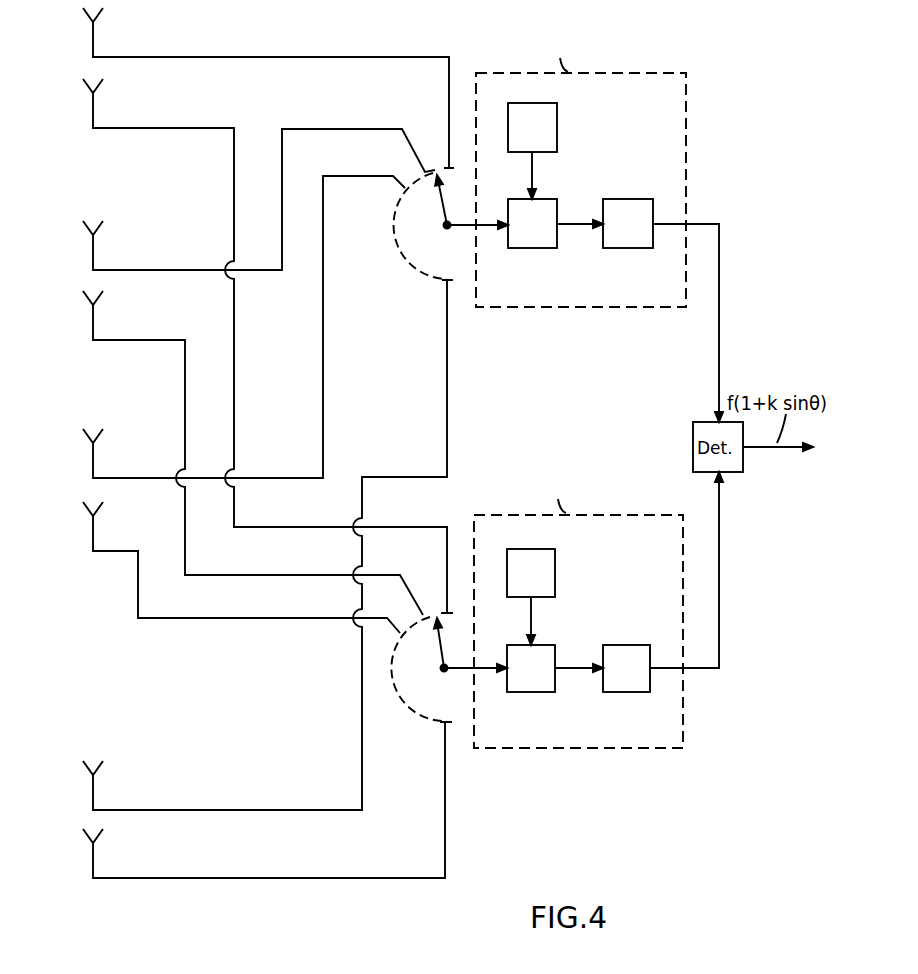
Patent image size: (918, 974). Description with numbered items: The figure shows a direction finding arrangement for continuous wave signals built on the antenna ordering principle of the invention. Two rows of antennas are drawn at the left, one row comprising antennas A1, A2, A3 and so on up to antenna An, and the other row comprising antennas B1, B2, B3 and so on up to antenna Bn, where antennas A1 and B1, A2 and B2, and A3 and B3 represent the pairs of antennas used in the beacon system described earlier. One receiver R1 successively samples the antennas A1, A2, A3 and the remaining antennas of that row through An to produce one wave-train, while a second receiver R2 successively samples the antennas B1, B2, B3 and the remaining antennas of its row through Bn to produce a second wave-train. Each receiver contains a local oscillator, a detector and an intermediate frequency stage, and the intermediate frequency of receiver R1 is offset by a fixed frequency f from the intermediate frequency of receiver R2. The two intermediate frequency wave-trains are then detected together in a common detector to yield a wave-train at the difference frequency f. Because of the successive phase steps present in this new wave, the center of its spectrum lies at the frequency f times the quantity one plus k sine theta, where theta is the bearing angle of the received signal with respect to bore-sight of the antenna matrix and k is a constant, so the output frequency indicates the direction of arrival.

The antenna A1 is at (251, 88).
The antenna B1 is at (250, 346).
The antenna A2 is at (241, 203).
The antenna B2 is at (235, 453).
The antenna A3 is at (226, 331).
The antenna B3 is at (224, 567).
The antenna An is at (249, 549).
The antenna Bn is at (249, 804).
The receiver R1 is at (643, 80).
The receiver R2 is at (604, 527).